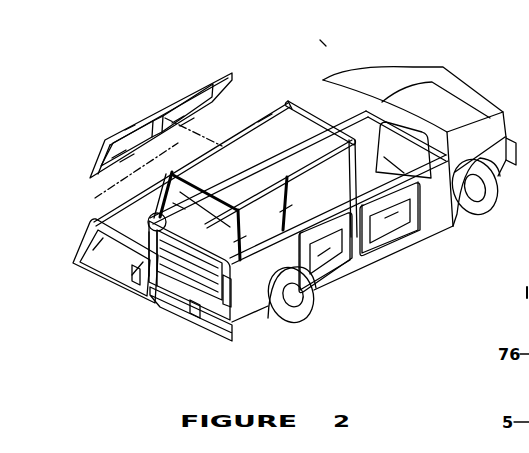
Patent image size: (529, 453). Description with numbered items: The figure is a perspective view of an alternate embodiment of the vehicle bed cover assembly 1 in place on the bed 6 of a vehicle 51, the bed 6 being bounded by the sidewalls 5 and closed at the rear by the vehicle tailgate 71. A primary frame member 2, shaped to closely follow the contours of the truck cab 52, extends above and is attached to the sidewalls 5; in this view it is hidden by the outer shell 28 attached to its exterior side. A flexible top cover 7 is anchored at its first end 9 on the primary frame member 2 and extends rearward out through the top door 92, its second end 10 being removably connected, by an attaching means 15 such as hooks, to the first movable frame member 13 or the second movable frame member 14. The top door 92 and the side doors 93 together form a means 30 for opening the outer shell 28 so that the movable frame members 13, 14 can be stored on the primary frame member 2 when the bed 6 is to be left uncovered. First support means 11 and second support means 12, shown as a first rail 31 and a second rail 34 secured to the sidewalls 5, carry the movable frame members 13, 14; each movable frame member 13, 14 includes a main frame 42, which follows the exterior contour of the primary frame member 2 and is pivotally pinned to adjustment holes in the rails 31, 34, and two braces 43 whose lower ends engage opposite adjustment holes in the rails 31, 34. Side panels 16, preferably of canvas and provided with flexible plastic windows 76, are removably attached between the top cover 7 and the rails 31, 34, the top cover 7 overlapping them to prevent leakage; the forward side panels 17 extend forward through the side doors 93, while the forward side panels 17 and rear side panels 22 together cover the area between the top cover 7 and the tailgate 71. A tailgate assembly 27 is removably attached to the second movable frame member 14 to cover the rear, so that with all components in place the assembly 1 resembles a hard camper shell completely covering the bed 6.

The vehicle bed cover assembly 1 is at (266, 97).
The primary frame member 2 is at (347, 104).
The bed sidewalls 5 is at (235, 353).
The vehicle bed 6 is at (290, 261).
The top cover 7 is at (247, 137).
The first end 9 is at (309, 125).
The second end 10 is at (241, 160).
The first support means 11 is at (272, 232).
The second support means 12 is at (179, 160).
The first movable frame member 13 is at (288, 182).
The second movable frame member 14 is at (241, 208).
The means for attaching top cover 15 is at (213, 188).
The side panels 16 is at (429, 243).
The forward side panels 17 is at (198, 78).
The rear side panels 22 is at (115, 128).
The tailgate assembly 27 is at (131, 303).
The outer shell 28 is at (353, 138).
The means for opening outer shell 30 is at (342, 118).
The first rail 31 is at (317, 197).
The second rail 34 is at (148, 220).
The main frame 42 is at (297, 181).
The braces 43 is at (285, 209).
The vehicle 51 is at (324, 45).
The truck cab 52 is at (408, 151).
The vehicle tailgate 71 is at (200, 278).
The windows 76 is at (100, 161).
The top door 92 is at (308, 110).
The side doors 93 is at (421, 151).